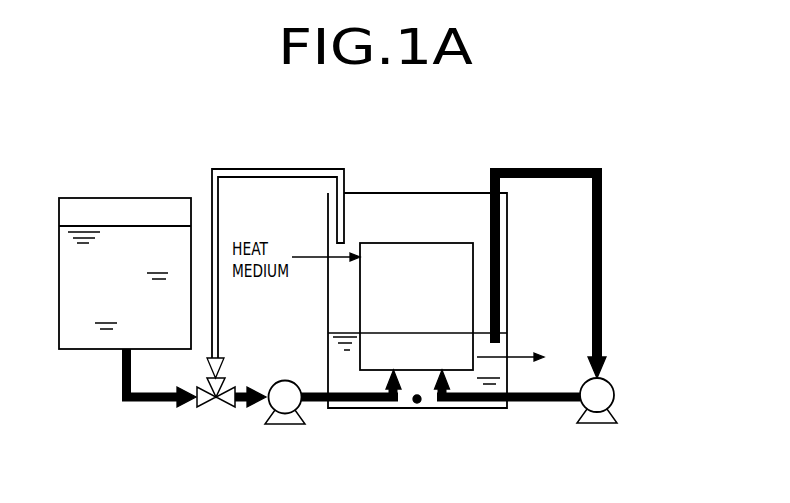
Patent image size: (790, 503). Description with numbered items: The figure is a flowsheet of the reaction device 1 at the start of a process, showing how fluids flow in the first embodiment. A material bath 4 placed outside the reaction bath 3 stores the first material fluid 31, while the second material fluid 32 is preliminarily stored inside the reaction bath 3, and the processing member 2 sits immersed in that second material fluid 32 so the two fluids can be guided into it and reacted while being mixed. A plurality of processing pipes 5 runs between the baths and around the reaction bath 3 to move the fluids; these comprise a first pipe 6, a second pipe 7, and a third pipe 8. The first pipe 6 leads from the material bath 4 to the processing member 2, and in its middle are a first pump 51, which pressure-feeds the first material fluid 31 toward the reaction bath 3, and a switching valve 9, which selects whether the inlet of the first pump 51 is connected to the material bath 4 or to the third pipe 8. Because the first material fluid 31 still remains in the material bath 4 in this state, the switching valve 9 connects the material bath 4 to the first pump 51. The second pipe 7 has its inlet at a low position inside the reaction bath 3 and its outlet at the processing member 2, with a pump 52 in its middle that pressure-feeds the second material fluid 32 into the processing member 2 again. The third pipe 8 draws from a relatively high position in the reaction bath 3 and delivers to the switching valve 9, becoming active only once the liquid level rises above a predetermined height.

The reaction device 1 is at (588, 137).
The processing member 2 is at (461, 243).
The reaction bath 3 is at (367, 193).
The material bath 4 is at (151, 198).
The processing pipes 5 is at (146, 403).
The first pipe 6 is at (197, 422).
The second pipe 7 is at (603, 228).
The third pipe 8 is at (252, 169).
The switching valve 9 is at (221, 408).
The first material fluid 31 is at (87, 341).
The second material fluid 32 is at (417, 403).
The first pump 51 is at (287, 380).
The pump 52 is at (606, 380).